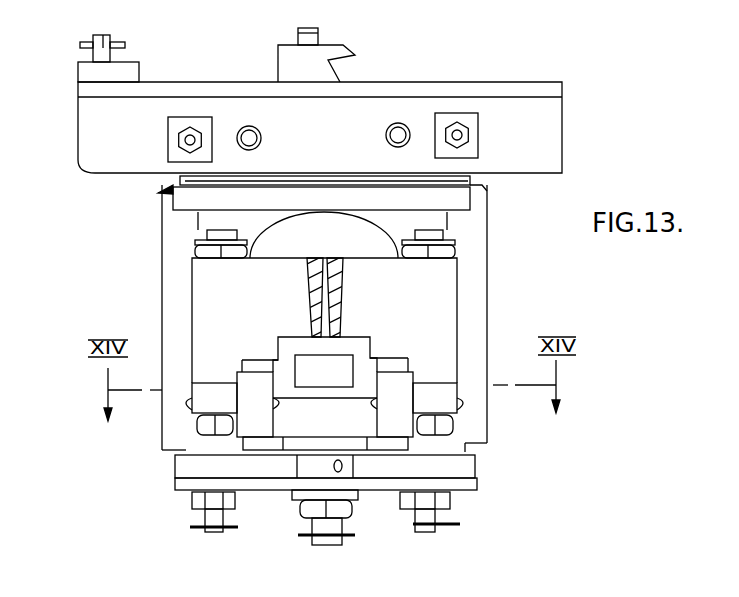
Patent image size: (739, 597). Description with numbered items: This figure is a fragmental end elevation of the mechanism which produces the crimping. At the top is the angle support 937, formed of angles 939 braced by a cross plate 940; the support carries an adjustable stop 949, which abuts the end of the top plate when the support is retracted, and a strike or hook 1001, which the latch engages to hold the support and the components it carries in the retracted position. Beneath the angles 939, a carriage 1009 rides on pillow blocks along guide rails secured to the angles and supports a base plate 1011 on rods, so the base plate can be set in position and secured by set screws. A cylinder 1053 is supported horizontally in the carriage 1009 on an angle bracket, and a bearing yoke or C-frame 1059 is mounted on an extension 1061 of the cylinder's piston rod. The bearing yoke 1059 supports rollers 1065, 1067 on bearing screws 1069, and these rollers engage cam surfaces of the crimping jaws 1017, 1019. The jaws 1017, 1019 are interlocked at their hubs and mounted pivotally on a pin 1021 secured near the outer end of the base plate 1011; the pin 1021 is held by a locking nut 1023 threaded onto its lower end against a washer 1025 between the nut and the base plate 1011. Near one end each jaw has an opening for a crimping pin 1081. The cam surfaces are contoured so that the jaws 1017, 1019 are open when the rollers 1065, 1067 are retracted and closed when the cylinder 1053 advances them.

The angle support 937 is at (461, 76).
The angles 939 is at (547, 117).
The cross plate 940 is at (88, 72).
The adjustable stop 949 is at (103, 35).
The hook 1001 is at (279, 62).
The carriage 1009 is at (157, 268).
The base plate 1011 is at (458, 483).
The crimping jaw 1017 is at (254, 392).
The crimping jaw 1019 is at (417, 363).
The pin 1021 is at (323, 530).
The locking nut 1023 is at (355, 508).
The washer 1025 is at (298, 494).
The cylinder 1053 is at (325, 222).
The bearing yoke 1059 is at (448, 274).
The extension 1061 is at (337, 302).
The roller 1065 is at (212, 393).
The roller 1067 is at (453, 400).
The bearing screws 1069 is at (458, 457).
The crimping pin 1081 is at (325, 373).